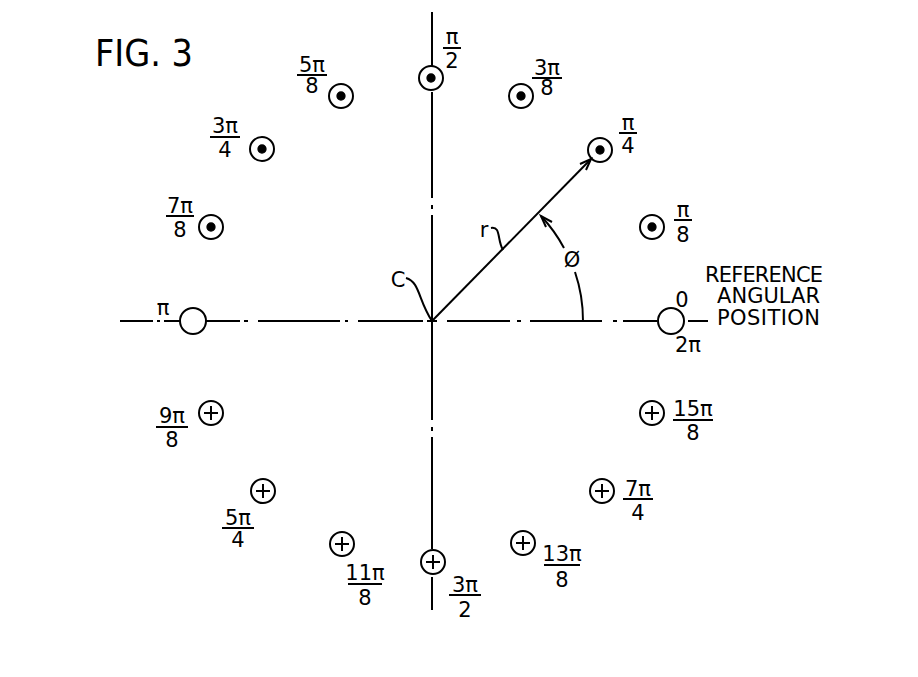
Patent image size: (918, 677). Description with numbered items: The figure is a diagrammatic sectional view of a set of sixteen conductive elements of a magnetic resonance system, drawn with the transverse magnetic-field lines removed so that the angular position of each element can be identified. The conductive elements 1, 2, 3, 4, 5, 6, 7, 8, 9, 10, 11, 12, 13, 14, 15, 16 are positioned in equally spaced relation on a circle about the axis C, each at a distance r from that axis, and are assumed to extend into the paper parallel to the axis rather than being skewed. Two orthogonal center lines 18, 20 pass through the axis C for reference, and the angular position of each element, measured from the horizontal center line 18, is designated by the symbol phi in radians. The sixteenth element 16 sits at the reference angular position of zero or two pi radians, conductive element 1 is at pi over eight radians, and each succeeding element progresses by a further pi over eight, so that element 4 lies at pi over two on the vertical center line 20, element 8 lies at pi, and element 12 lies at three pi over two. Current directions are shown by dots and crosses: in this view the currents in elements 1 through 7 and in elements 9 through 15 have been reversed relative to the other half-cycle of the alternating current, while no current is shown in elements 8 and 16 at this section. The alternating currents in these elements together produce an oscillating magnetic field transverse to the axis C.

The conductive element 1 is at (642, 233).
The conductive element 2 is at (588, 151).
The conductive element 3 is at (514, 106).
The conductive element 4 is at (424, 88).
The conductive element 5 is at (343, 108).
The conductive element 6 is at (269, 159).
The conductive element 7 is at (221, 233).
The conductive element 8 is at (205, 315).
The conductive element 9 is at (221, 407).
The conductive element 10 is at (269, 481).
The conductive element 11 is at (348, 534).
The conductive element 12 is at (439, 552).
The conductive element 13 is at (523, 531).
The conductive element 14 is at (597, 480).
The conductive element 15 is at (641, 409).
The conductive element 16 is at (660, 328).
The center line 18 is at (503, 323).
The center line 20 is at (432, 170).